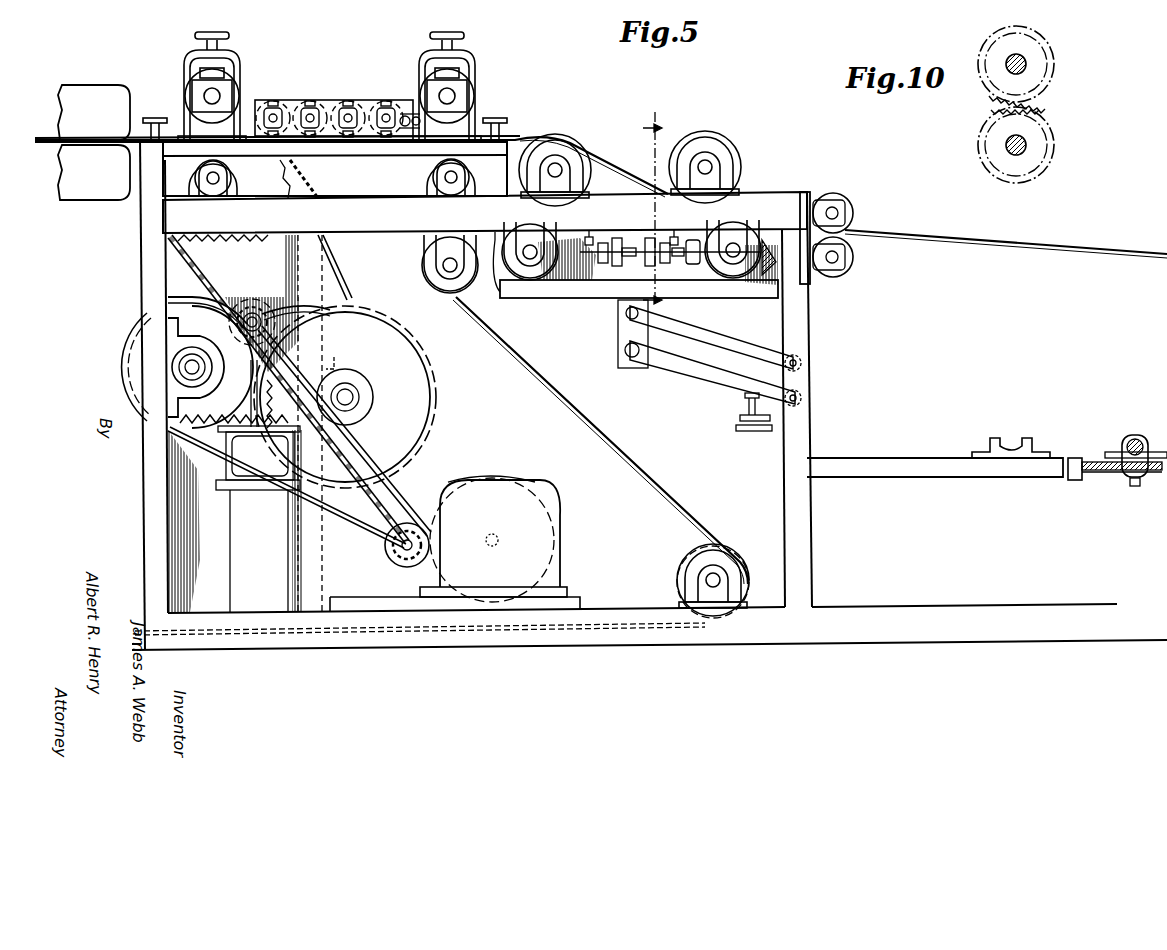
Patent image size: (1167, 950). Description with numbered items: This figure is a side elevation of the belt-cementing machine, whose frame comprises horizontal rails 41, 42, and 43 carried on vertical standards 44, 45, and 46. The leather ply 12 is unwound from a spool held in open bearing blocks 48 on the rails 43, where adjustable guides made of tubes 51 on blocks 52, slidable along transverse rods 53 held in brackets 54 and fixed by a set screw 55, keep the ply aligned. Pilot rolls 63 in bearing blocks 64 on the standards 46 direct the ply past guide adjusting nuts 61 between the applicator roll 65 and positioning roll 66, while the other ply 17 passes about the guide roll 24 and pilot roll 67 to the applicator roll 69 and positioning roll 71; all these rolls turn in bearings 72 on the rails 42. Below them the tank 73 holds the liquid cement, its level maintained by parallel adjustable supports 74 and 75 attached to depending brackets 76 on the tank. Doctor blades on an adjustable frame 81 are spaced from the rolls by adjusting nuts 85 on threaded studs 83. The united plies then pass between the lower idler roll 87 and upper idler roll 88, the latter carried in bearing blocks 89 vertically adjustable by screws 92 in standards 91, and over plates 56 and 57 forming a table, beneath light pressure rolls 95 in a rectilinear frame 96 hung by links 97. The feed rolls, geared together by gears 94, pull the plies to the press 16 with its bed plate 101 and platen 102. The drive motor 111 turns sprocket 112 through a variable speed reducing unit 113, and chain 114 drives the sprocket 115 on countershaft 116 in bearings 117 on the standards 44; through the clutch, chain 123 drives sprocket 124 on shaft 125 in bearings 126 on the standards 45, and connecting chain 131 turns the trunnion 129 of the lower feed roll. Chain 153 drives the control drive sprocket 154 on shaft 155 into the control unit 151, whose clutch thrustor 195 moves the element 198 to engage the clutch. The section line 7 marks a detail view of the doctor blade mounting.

In FIG. 5, the press 16 is at (96, 86).
In FIG. 5, the bed plate 101 is at (94, 112).
In FIG. 5, the platen 102 is at (94, 172).
In FIG. 5, the adjusting nuts 61 is at (160, 116).
In FIG. 5, the bearing blocks 89 is at (225, 92).
In FIG. 5, the screws 92 is at (224, 32).
In FIG. 5, the standards 91 is at (475, 66).
In FIG. 5, the upper idler roll 88 is at (470, 90).
In FIG. 5, the rectilinear frame 96 is at (292, 106).
In FIG. 5, the light pressure rolls 95 is at (330, 104).
In FIG. 5, the links 97 is at (408, 114).
In FIG. 5, the horizontal rails 41 is at (359, 148).
In FIG. 5, the horizontal rails 42 is at (622, 209).
In FIG. 5, the plate 56 is at (320, 156).
In FIG. 5, the lower idler roll 87 is at (432, 170).
In FIG. 5, the bearings 72 is at (735, 172).
In FIG. 5, the trunnion 129 is at (206, 182).
In FIG. 5, the plate 57 is at (515, 140).
In FIG. 5, the positioning roll 71 is at (580, 148).
In FIG. 5, the positioning roll 66 is at (730, 145).
In FIG. 5, the section line 7- 7 is at (660, 209).
In FIG. 5, the bearing blocks 64 is at (824, 200).
In FIG. 5, the pilot rolls 63 is at (852, 208).
In FIG. 5, the ply 12 is at (955, 245).
In FIG. 10, the gears 94 is at (1049, 122).
In FIG. 5, the pilot roll 67 is at (460, 296).
In FIG. 5, the applicator roll 69 is at (498, 292).
In FIG. 5, the pan or tank 73 is at (558, 298).
In FIG. 5, the adjusting nuts 85 is at (606, 258).
In FIG. 5, the adjustable frame 81 is at (654, 260).
In FIG. 5, the threaded studs 83 is at (680, 258).
In FIG. 5, the applicator roll 65 is at (770, 272).
In FIG. 5, the depending brackets 76 is at (618, 336).
In FIG. 5, the adjustable support 74 is at (730, 336).
In FIG. 5, the adjustable support 75 is at (702, 380).
In FIG. 5, the ply 17 is at (616, 418).
In FIG. 5, the guide roll 24 is at (738, 556).
In FIG. 5, the horizontal rails 43 is at (915, 460).
In FIG. 5, the open bearing blocks 48 is at (988, 440).
In FIG. 5, the vertical standards 46 is at (810, 535).
In FIG. 5, the tubes 51 is at (1092, 470).
In FIG. 5, the brackets 54 is at (1104, 452).
In FIG. 5, the transverse rods 53 is at (1124, 440).
In FIG. 5, the blocks 52 is at (1140, 438).
In FIG. 5, the set screw 55 is at (1135, 486).
In FIG. 5, the vertical standards 45 is at (317, 423).
In FIG. 5, the bearings 117 is at (175, 328).
In FIG. 5, the countershaft 116 is at (184, 368).
In FIG. 5, the driven sprocket 115 is at (234, 394).
In FIG. 5, the control drive sprocket 154 is at (260, 314).
In FIG. 5, the shaft 155 is at (265, 310).
In FIG. 5, the chain 153 is at (238, 312).
In FIG. 5, the chain 123 is at (420, 378).
In FIG. 5, the sprocket 124 is at (373, 393).
In FIG. 5, the shaft 125 is at (359, 400).
In FIG. 5, the bearings 126 is at (334, 356).
In FIG. 5, the connecting chain 131 is at (345, 300).
In FIG. 5, the chain 114 is at (300, 500).
In FIG. 5, the sprocket 112 is at (422, 545).
In FIG. 5, the variable speed reducing unit 113 is at (432, 486).
In FIG. 5, the motor 111 is at (506, 476).
In FIG. 5, the movable element 198 is at (268, 430).
In FIG. 5, the clutch thrustor 195 is at (231, 486).
In FIG. 5, the control unit 151 is at (192, 471).
In FIG. 5, the vertical standards 44 is at (150, 516).